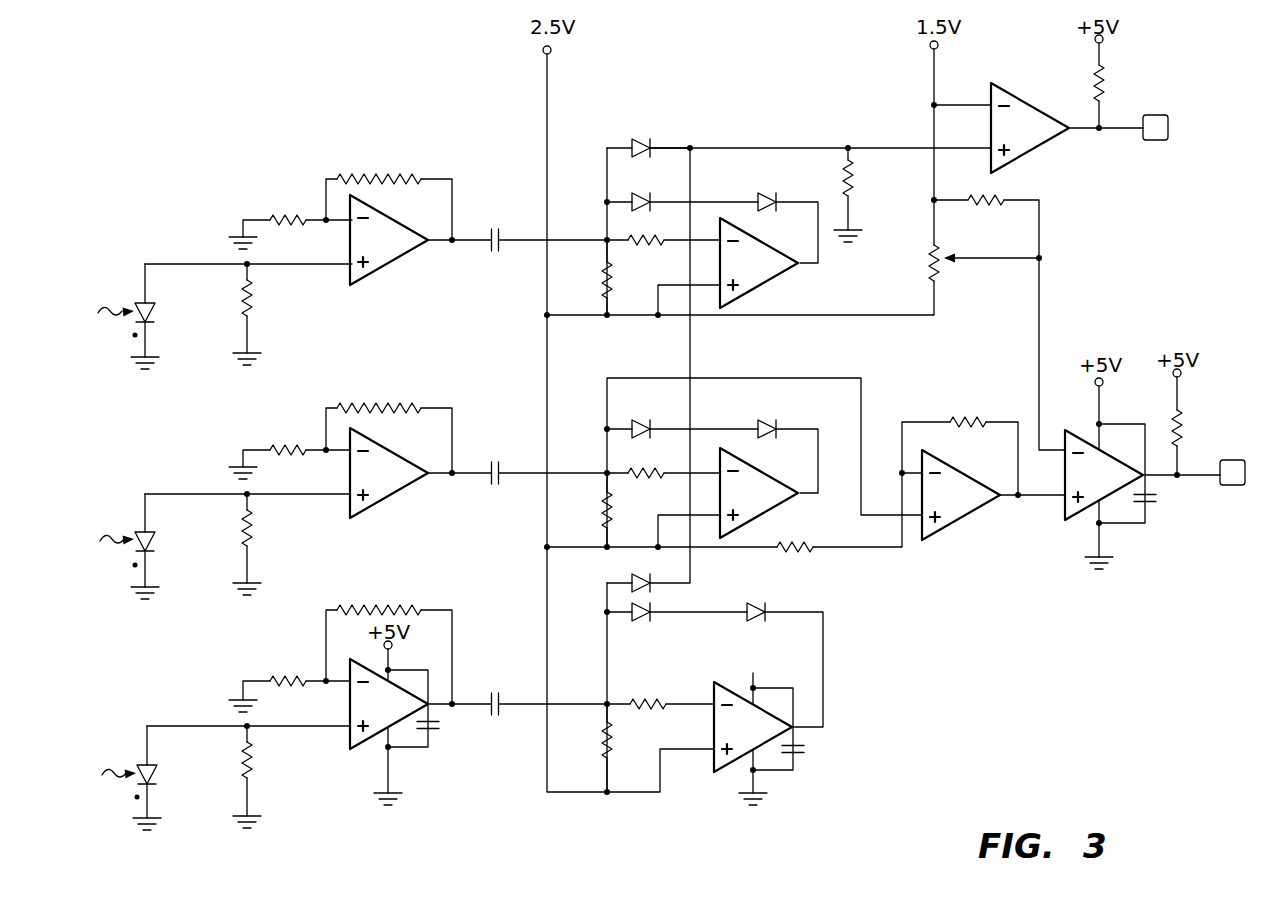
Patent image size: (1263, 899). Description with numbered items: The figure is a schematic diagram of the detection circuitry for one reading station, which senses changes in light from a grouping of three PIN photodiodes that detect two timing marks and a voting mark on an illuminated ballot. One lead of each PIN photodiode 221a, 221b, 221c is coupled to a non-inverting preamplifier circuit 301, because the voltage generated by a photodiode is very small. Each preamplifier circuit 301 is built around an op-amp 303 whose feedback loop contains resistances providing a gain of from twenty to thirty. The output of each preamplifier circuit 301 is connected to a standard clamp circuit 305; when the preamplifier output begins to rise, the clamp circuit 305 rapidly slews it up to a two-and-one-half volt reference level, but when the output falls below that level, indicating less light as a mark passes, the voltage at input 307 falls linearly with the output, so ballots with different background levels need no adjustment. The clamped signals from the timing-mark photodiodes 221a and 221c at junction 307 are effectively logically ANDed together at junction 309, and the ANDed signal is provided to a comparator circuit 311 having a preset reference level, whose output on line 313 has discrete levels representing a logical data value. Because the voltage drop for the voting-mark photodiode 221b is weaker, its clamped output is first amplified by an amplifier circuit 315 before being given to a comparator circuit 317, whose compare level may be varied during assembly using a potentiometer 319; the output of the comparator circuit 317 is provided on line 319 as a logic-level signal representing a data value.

The PIN photodiode 221a is at (133, 293).
The PIN photodiode 221b is at (131, 512).
The PIN photodiode 221c is at (129, 745).
The non-inverting preamplifier circuit 301 is at (244, 196).
The op-amp 303 is at (402, 262).
The clamp circuit 305 is at (797, 134).
The input (junction) 307 is at (605, 243).
The junction 309 is at (692, 143).
The comparator circuit 311 is at (1019, 98).
The line 313 is at (1125, 132).
The amplifier circuit 315 is at (945, 402).
The comparator circuit 317 is at (1131, 378).
The potentiometer / output line 319 is at (946, 270).